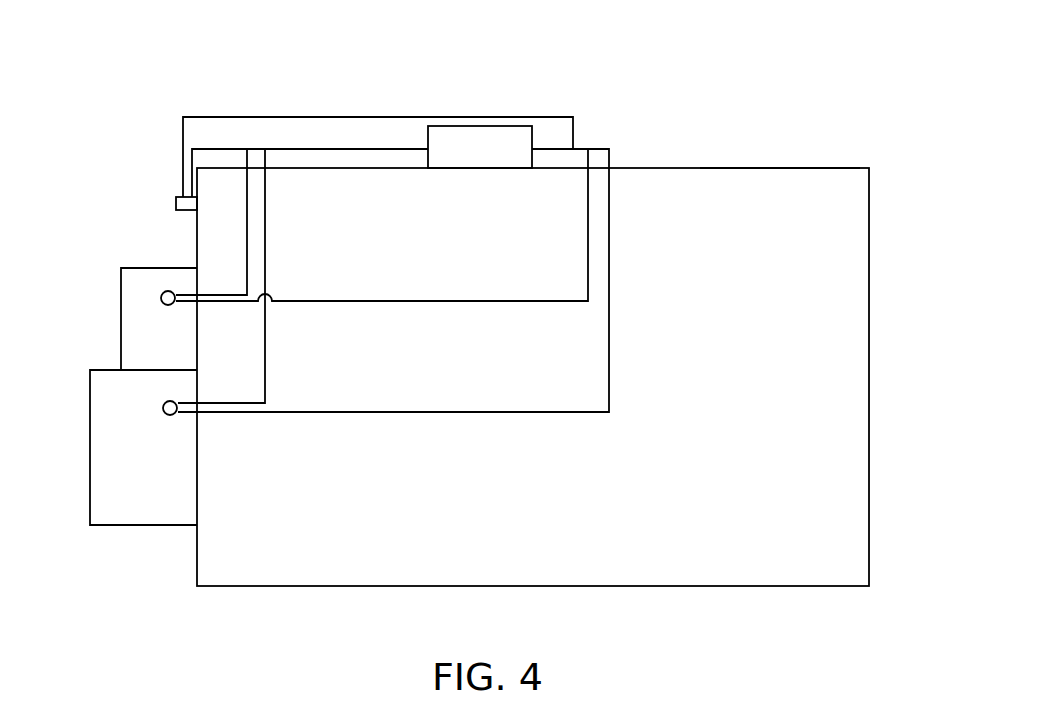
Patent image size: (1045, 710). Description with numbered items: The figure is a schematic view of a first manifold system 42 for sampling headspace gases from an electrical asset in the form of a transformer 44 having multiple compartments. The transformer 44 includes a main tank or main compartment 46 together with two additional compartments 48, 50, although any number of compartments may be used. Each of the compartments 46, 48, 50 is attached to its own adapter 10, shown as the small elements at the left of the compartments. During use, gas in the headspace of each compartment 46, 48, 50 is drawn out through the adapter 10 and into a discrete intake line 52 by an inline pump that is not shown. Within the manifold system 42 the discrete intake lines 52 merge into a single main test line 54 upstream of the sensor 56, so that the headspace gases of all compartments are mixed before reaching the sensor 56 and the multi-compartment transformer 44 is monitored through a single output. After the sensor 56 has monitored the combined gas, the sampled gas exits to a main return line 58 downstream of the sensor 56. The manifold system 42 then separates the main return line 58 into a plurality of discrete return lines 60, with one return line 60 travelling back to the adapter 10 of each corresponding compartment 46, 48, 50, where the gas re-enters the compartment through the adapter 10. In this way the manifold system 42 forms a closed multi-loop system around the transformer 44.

The adapter 10 is at (176, 203).
The manifold system 42 is at (808, 108).
The transformer 44 is at (869, 368).
The main compartment 46 is at (778, 197).
The additional compartment 48 is at (140, 527).
The additional compartment 50 is at (120, 339).
The intake line 52 is at (228, 148).
The main test line 54 is at (405, 150).
The sensor 56 is at (502, 158).
The main return line 58 is at (553, 150).
The return line 60 is at (388, 117).